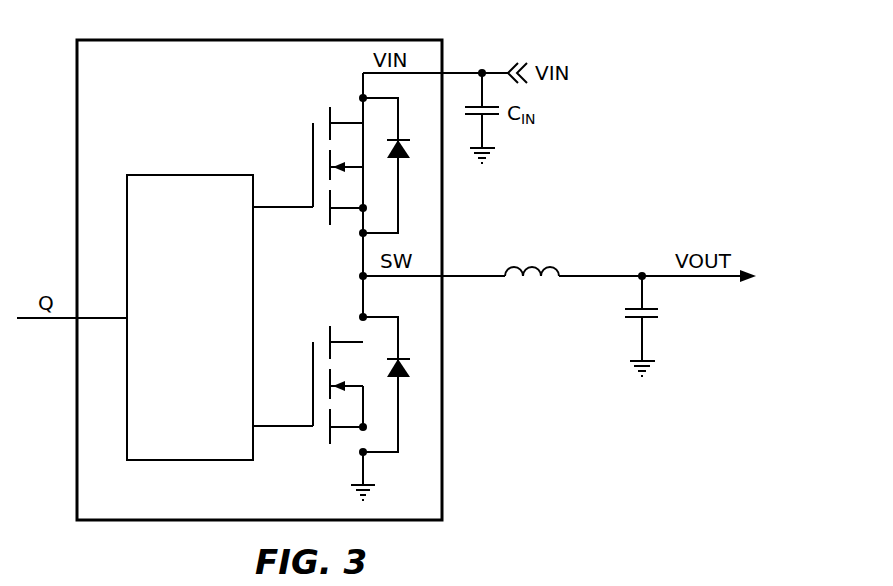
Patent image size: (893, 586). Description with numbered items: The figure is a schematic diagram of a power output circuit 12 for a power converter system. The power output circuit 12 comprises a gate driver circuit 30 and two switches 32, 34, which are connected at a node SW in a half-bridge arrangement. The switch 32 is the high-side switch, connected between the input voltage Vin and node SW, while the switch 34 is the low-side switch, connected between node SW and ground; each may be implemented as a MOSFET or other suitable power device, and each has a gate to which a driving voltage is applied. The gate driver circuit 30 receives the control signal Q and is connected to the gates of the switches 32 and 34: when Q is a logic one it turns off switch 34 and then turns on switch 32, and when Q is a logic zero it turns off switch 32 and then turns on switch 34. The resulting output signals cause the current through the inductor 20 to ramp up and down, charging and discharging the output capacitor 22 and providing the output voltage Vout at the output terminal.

The power output circuit 12 is at (160, 522).
The inductor 20 is at (515, 258).
The output capacitor 22 is at (635, 320).
The gate driver circuit 30 is at (215, 175).
The switch 32 is at (328, 108).
The switch 34 is at (328, 326).